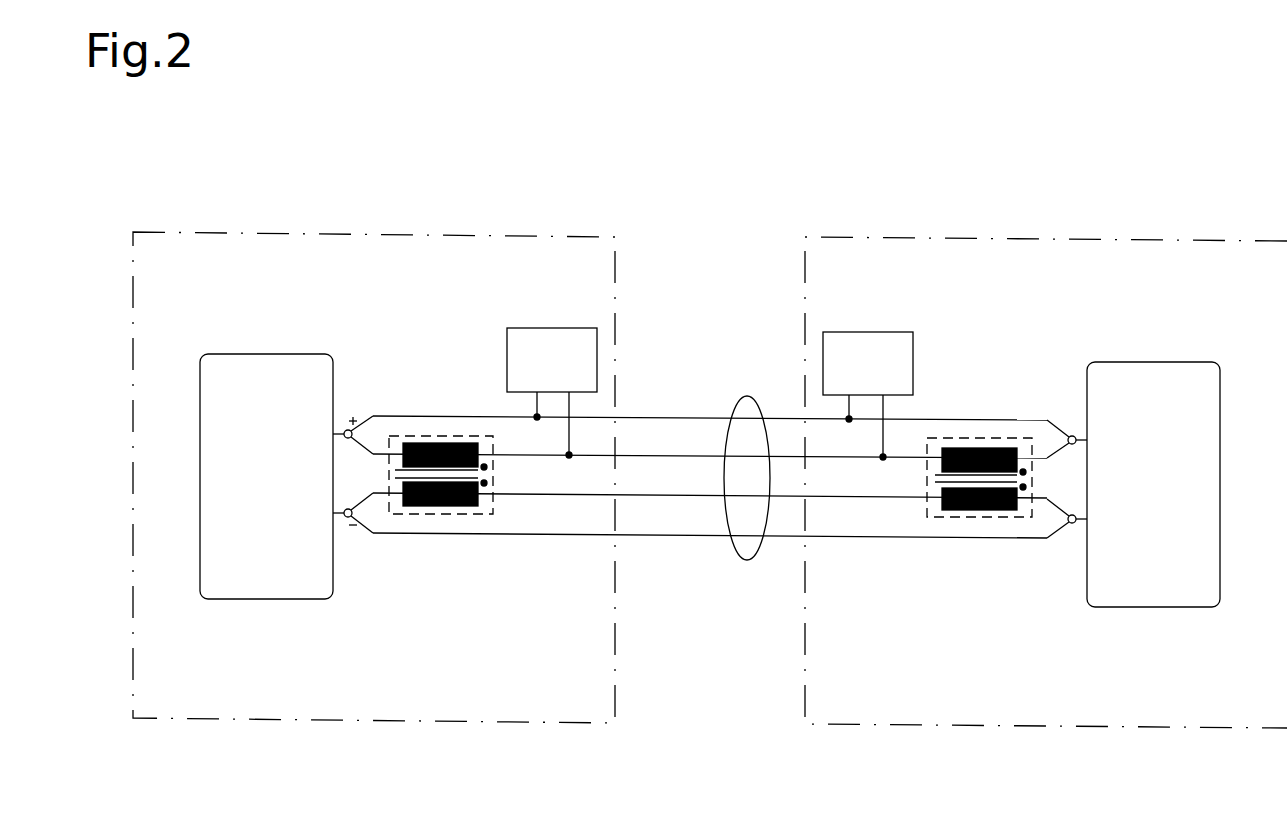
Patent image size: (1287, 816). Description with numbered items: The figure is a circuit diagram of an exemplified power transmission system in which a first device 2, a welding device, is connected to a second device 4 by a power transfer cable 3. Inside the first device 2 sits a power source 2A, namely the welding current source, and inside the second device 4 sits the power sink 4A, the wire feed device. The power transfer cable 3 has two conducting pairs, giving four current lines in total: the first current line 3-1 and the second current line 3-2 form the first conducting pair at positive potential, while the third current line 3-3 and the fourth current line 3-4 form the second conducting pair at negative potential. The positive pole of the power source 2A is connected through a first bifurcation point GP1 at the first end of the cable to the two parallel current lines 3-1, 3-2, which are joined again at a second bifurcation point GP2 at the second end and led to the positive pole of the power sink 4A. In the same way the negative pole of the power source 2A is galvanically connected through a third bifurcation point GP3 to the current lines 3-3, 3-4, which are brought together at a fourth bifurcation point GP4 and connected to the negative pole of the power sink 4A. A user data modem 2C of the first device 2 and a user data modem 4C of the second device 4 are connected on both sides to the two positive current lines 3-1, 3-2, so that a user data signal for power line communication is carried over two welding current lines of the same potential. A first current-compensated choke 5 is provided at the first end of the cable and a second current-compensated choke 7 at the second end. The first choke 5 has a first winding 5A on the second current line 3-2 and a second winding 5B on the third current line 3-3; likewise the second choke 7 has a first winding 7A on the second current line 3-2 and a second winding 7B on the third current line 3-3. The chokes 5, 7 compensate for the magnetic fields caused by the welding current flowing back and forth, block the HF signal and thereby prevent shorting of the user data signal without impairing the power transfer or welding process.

The first device 2 is at (374, 477).
The power source 2A is at (268, 599).
The user data modem 2C is at (552, 393).
The power transfer cable 3 is at (740, 558).
The first current line 3-1 is at (643, 417).
The second current line 3-2 is at (643, 455).
The third current line 3-3 is at (643, 494).
The fourth current line 3-4 is at (643, 534).
The second device 4 is at (1046, 482).
The power sink 4A is at (1152, 607).
The user data modem 4C is at (868, 396).
The first current-compensated choke 5 is at (485, 508).
The first winding 5A is at (440, 443).
The second winding 5B is at (440, 506).
The second current-compensated choke 7 is at (1025, 515).
The first winding 7A is at (980, 448).
The second winding 7B is at (978, 510).
The first bifurcation point GP1 is at (346, 438).
The second bifurcation point GP2 is at (1070, 444).
The third bifurcation point GP3 is at (346, 517).
The fourth bifurcation point GP4 is at (1070, 523).